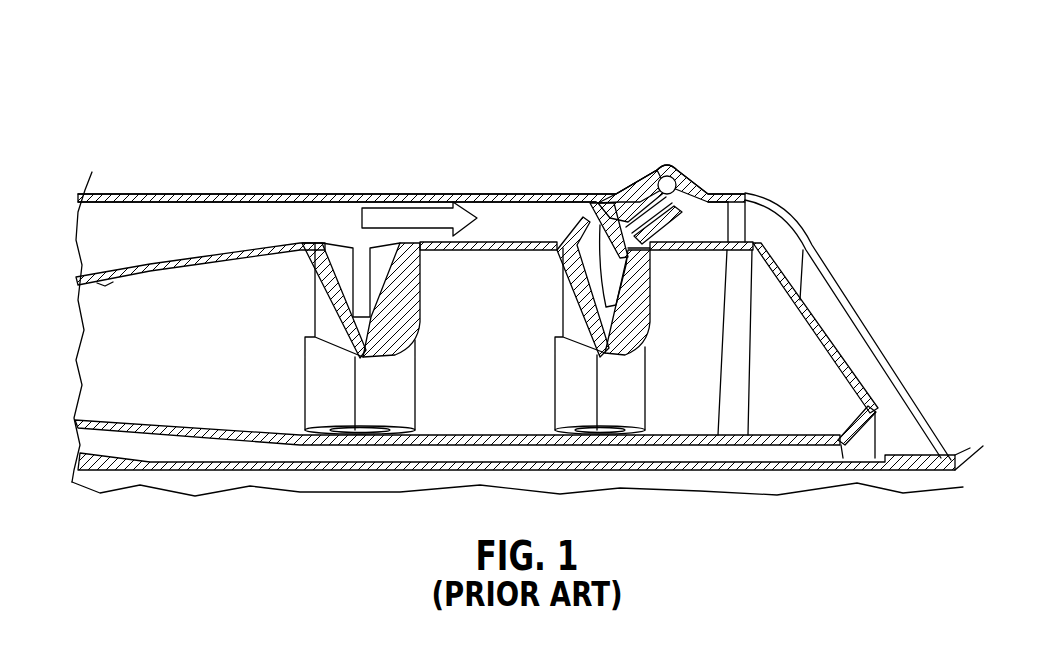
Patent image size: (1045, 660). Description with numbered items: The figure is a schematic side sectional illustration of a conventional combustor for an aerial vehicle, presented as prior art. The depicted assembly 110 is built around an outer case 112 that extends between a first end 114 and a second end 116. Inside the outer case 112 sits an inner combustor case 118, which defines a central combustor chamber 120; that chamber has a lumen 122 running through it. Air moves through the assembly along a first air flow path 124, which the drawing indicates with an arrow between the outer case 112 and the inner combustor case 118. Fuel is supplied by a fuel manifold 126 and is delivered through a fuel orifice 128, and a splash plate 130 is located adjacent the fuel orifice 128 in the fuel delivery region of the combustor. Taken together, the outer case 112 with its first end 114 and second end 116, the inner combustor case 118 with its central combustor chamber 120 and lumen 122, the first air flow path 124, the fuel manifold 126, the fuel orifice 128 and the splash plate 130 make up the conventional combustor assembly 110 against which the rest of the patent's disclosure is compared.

The assembly 110 is at (192, 86).
The outer case 112 is at (368, 194).
The first end 114 is at (165, 194).
The second end 116 is at (743, 193).
The inner combustor case 118 is at (177, 258).
The central combustor chamber 120 is at (533, 270).
The lumen 122 is at (572, 236).
The first air flow path 124 is at (380, 217).
The fuel manifold 126 is at (690, 182).
The fuel orifice 128 is at (647, 187).
The splash plate 130 is at (617, 237).